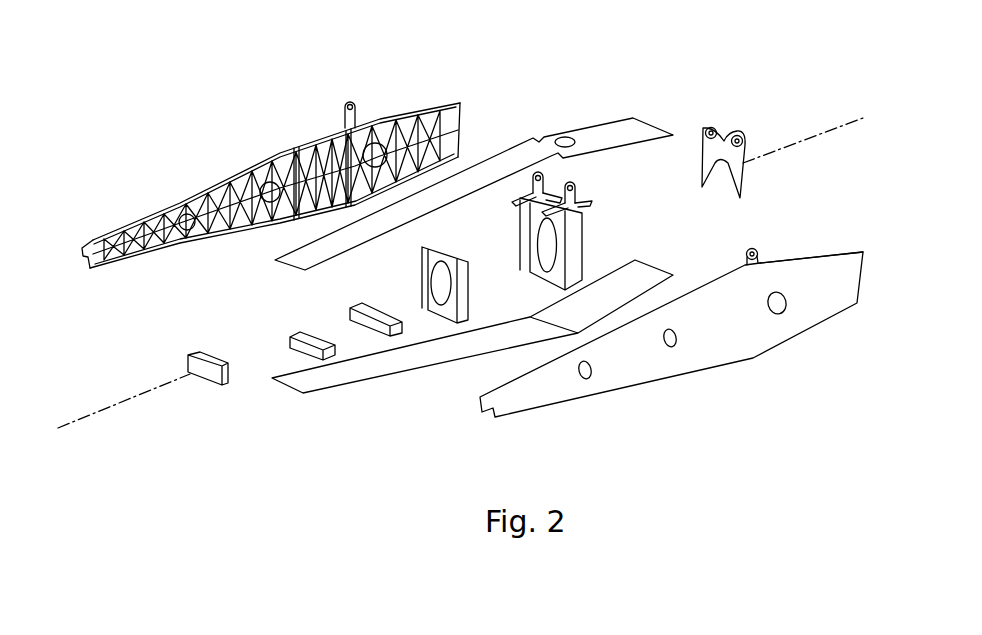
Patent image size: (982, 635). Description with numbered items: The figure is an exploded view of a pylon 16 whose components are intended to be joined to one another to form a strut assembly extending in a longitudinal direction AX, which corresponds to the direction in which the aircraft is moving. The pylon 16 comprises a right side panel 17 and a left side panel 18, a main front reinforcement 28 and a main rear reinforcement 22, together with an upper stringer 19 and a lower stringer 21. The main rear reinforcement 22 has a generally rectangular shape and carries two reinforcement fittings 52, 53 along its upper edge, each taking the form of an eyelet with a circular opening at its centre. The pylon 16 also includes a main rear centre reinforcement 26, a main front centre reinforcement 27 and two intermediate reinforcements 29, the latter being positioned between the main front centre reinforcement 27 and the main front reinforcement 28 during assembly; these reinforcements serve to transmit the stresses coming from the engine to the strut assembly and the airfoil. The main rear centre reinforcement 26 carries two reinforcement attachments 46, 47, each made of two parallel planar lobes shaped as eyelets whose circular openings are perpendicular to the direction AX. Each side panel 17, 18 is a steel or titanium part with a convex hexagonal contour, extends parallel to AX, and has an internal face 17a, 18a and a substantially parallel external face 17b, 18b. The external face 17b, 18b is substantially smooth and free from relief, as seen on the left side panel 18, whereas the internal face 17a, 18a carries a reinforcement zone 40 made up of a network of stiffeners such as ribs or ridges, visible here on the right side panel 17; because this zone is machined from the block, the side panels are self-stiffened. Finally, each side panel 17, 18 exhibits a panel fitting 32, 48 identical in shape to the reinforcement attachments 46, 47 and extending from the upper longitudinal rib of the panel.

The pylon 16 is at (140, 118).
The right side panel 17 is at (277, 153).
The internal face 17a is at (312, 138).
The external face 17b is at (158, 212).
The panel fitting 32 is at (352, 103).
The reinforcement zone 40 is at (415, 110).
The upper stringer 19 is at (498, 167).
The reinforcement attachment 46 is at (538, 170).
The reinforcement attachment 47 is at (571, 180).
The main rear centre reinforcement 26 is at (570, 243).
The main front centre reinforcement 27 is at (447, 245).
The main rear reinforcement 22 is at (737, 177).
The reinforcement fitting 52 is at (703, 128).
The reinforcement fitting 53 is at (740, 135).
The longitudinal direction AX is at (147, 395).
The main front reinforcement 28 is at (213, 382).
The intermediate reinforcements 29 is at (290, 337).
The lower stringer 21 is at (365, 370).
The left side panel 18 is at (638, 372).
The internal face 18a is at (850, 240).
The external face 18b is at (825, 298).
The panel fitting 48 is at (753, 245).